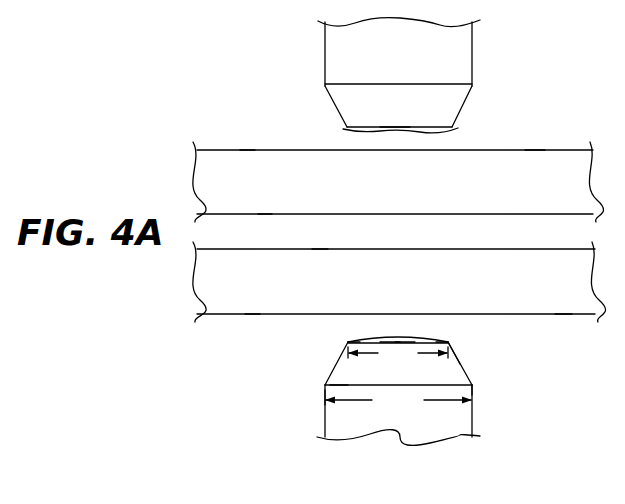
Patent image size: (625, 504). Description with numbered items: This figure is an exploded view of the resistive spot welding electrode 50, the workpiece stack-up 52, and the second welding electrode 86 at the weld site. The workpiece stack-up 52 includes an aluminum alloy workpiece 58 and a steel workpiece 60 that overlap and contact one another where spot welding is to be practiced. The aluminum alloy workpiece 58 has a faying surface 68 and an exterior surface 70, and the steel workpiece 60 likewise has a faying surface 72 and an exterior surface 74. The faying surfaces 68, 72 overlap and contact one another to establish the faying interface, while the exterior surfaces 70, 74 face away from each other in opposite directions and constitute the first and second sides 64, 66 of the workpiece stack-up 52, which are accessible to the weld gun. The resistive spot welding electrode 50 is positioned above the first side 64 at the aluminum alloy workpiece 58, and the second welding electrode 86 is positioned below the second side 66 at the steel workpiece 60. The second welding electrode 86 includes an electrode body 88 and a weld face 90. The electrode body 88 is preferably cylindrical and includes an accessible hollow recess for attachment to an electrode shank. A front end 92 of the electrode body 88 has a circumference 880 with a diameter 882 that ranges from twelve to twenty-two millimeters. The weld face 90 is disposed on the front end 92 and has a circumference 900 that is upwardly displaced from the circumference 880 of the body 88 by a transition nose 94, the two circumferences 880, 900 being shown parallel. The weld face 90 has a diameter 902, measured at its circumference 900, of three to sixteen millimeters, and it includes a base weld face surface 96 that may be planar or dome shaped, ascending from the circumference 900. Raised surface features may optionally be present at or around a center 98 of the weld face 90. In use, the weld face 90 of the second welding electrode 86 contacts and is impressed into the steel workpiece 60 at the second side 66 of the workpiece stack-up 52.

The resistive spot welding electrode 50 is at (310, 59).
The workpiece stack-up 52 is at (394, 137).
The aluminum alloy workpiece 58 is at (225, 180).
The steel workpiece 60 is at (220, 280).
The first side 64 is at (536, 147).
The second side 66 is at (564, 318).
The faying surface 68 is at (265, 215).
The exterior surface 70 is at (247, 150).
The faying surface 72 is at (320, 249).
The exterior surface 74 is at (252, 315).
The second welding electrode 86 is at (303, 396).
The electrode body 88 is at (453, 423).
The weld face 90 is at (361, 333).
The front end 92 is at (473, 382).
The transition nose 94 is at (452, 368).
The base weld face surface 96 is at (436, 340).
The center 98 is at (400, 338).
The circumference 880 is at (346, 384).
The diameter 882 is at (398, 400).
The circumference 900 is at (392, 338).
The diameter 902 is at (398, 353).